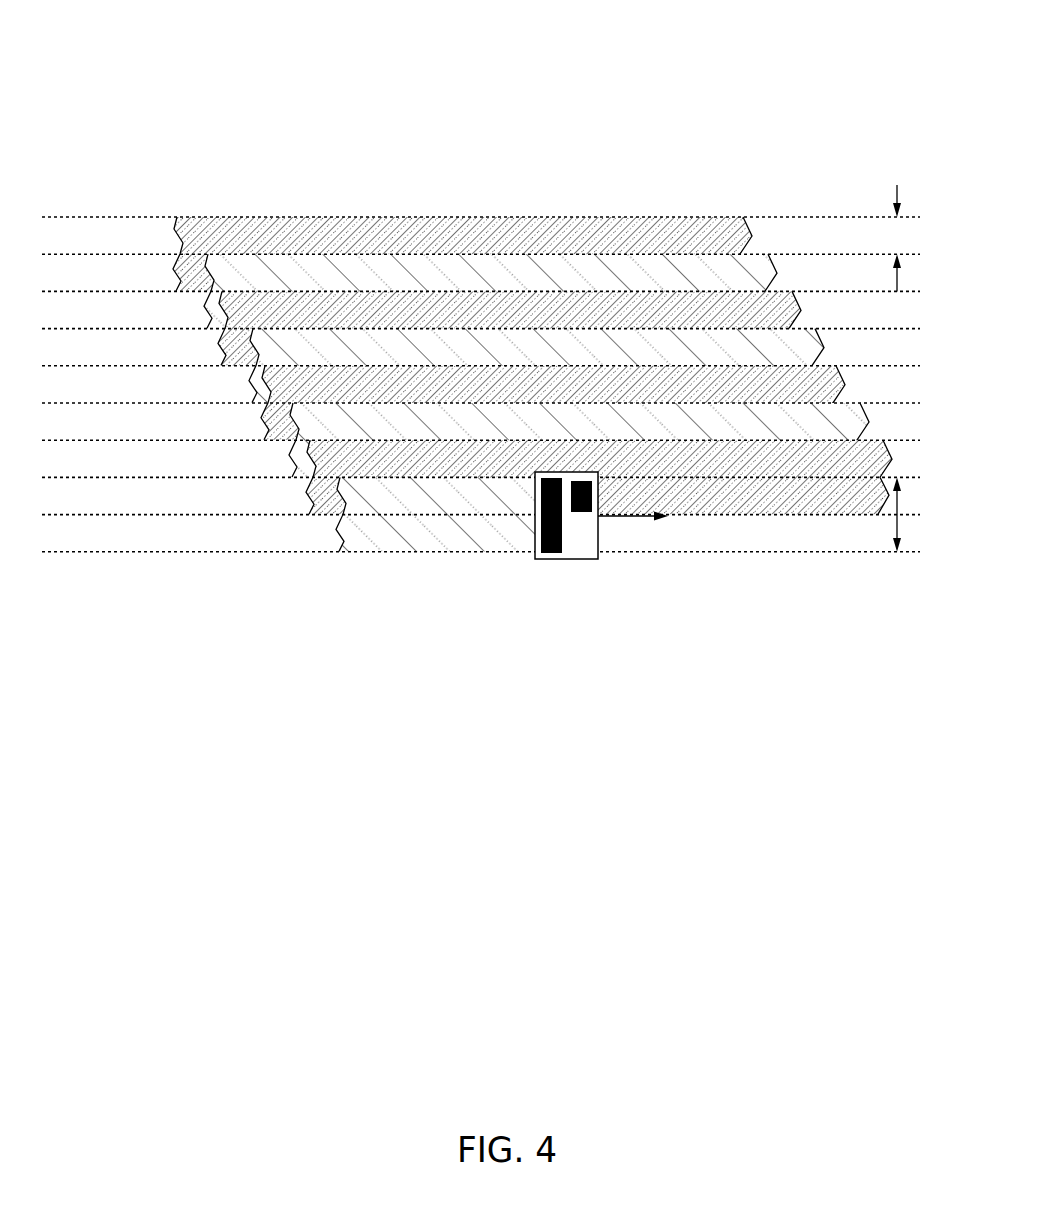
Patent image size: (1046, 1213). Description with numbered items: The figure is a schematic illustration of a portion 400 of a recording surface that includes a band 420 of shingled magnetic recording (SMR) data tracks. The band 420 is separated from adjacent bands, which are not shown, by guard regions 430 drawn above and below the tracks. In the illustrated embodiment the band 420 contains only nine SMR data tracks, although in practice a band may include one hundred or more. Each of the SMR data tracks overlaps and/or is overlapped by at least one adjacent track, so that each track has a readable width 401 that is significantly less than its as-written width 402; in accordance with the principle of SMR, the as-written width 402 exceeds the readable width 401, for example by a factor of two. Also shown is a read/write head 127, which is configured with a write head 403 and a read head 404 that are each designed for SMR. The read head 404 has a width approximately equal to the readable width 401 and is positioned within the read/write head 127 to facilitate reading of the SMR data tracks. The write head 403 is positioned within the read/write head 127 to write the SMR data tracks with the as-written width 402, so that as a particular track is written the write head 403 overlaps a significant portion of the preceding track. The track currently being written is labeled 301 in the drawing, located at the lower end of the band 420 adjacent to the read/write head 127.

The portion of recording surface 400 is at (501, 356).
The band 420 is at (309, 217).
The guard regions 430 is at (526, 156).
The readable width 401 is at (897, 188).
The as-written width 402 is at (897, 527).
The track being written 301 is at (453, 530).
The read/write head 127 is at (585, 560).
The write head 403 is at (551, 556).
The read head 404 is at (581, 512).